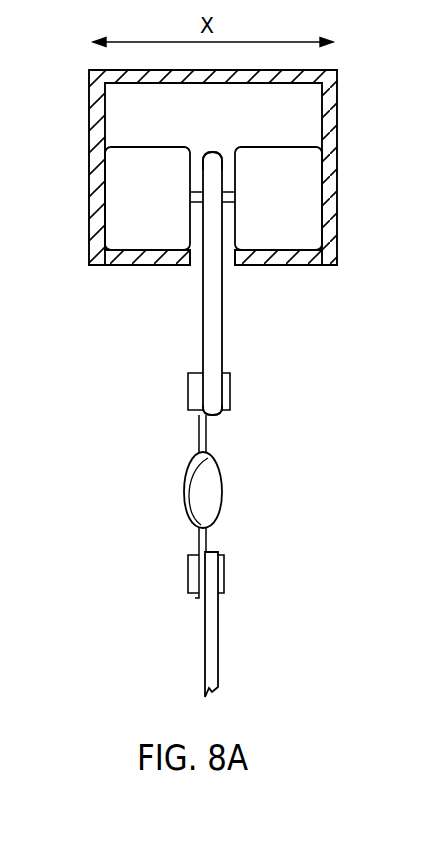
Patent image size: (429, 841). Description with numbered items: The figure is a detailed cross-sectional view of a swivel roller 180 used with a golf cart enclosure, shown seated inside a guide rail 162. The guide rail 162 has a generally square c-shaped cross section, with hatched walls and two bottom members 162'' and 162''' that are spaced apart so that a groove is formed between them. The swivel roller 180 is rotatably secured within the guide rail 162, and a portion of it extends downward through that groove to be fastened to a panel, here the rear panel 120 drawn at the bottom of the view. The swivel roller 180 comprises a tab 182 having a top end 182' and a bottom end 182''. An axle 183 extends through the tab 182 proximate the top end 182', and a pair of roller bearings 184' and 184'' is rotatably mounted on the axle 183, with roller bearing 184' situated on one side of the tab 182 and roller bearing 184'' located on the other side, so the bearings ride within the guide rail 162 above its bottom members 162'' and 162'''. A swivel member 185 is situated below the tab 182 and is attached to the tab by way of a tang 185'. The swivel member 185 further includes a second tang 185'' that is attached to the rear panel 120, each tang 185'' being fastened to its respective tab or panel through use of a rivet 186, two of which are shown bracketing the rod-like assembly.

The rear panel 120 is at (218, 652).
The guide rail 162 is at (241, 167).
The bottom member 162'' is at (291, 276).
The bottom member 162''' is at (148, 276).
The swivel roller 180 is at (86, 363).
The tab 182 is at (242, 283).
The top end 182' is at (192, 135).
The bottom end 182'' is at (235, 431).
The axle 183 is at (229, 190).
The roller bearing 184' is at (121, 198).
The roller bearing 184'' is at (310, 198).
The swivel member 185 is at (174, 490).
The tang 185' is at (172, 433).
The tang 185'' is at (169, 559).
The rivet 186 is at (230, 394).